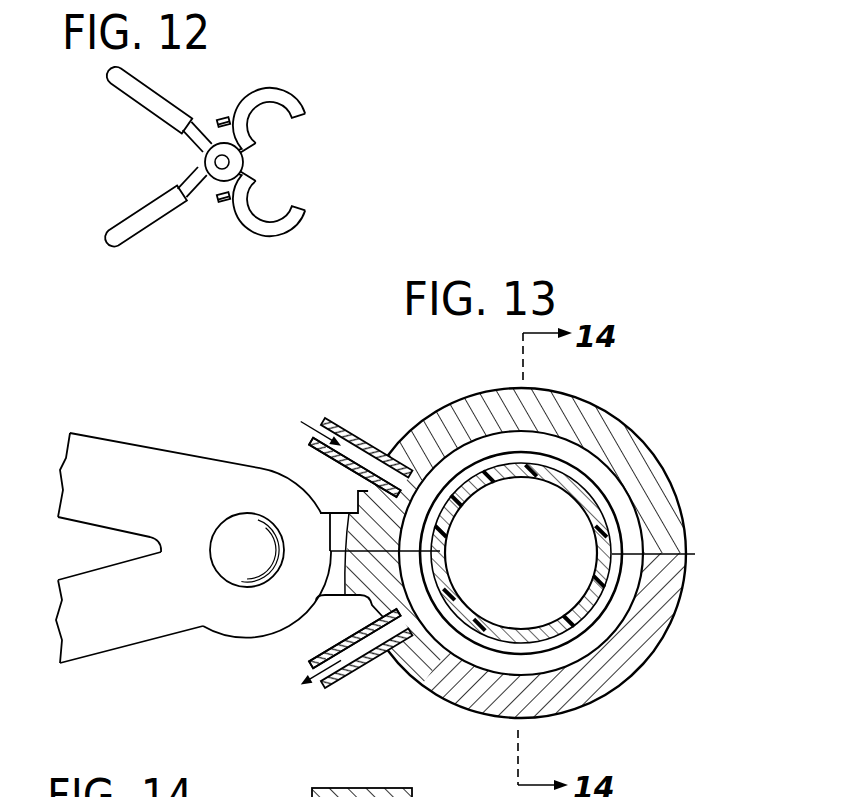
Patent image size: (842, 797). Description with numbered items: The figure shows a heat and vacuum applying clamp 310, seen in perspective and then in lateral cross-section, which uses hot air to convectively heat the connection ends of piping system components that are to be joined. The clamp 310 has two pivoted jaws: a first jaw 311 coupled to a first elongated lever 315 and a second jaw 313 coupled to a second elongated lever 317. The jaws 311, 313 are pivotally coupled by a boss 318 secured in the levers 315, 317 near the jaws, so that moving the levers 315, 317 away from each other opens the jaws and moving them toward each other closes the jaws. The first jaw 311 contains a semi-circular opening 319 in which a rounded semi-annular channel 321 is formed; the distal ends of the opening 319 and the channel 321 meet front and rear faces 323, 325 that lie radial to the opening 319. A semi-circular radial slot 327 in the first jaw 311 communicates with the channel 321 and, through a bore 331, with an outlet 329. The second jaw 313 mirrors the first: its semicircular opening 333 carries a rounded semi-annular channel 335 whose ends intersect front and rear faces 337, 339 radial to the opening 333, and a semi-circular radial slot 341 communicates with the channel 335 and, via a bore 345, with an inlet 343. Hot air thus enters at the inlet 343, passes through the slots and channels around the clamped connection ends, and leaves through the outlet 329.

In FIG. 12, the heat and vacuum applying clamp 310 is at (322, 142).
In FIG. 13, the heat and vacuum applying clamp 310 is at (652, 415).
In FIG. 13, the first jaw 311 is at (672, 617).
In FIG. 13, the second jaw 313 is at (607, 515).
In FIG. 12, the first elongated lever 315 is at (193, 125).
In FIG. 13, the first elongated lever 315 is at (145, 460).
In FIG. 12, the second elongated lever 317 is at (193, 187).
In FIG. 13, the second elongated lever 317 is at (100, 643).
In FIG. 13, the boss 318 is at (246, 578).
In FIG. 13, the semi-circular opening 319 is at (570, 633).
In FIG. 13, the rounded semi-annular channel 321 is at (600, 612).
In FIG. 13, the front face 323 is at (676, 563).
In FIG. 13, the rear face 325 is at (345, 613).
In FIG. 13, the semi-circular radial slot 327 is at (627, 583).
In FIG. 13, the outlet 329 is at (337, 683).
In FIG. 13, the bore 331 is at (400, 625).
In FIG. 13, the semicircular opening 333 is at (640, 548).
In FIG. 13, the rounded semi-annular channel 335 is at (593, 478).
In FIG. 13, the front face 337 is at (648, 557).
In FIG. 13, the rear face 339 is at (352, 512).
In FIG. 13, the semi-circular radial slot 341 is at (573, 448).
In FIG. 13, the inlet 343 is at (340, 424).
In FIG. 13, the bore 345 is at (412, 466).